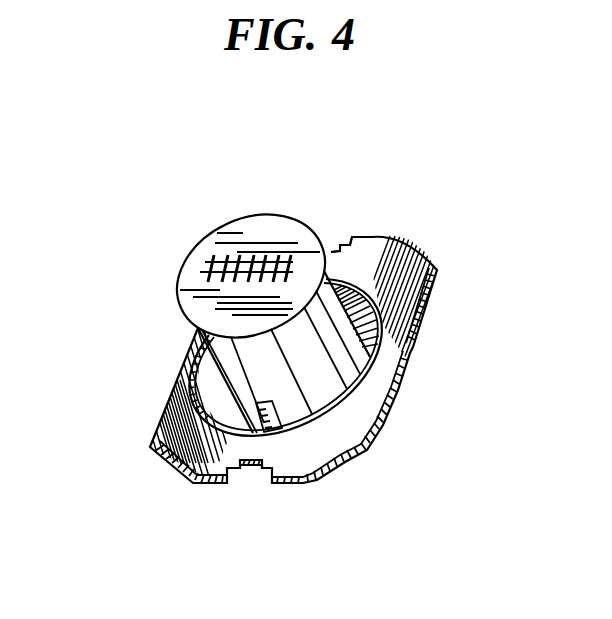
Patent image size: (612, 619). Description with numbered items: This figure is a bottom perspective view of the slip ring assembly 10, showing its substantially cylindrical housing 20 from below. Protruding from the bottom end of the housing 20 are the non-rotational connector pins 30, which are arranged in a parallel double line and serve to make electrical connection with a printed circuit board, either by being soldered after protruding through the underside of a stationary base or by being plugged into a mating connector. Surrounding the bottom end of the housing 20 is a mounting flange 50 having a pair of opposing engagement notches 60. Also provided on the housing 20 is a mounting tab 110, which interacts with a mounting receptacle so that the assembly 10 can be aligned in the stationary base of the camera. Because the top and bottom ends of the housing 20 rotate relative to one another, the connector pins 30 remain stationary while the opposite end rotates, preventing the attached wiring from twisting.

The slip ring assembly 10 is at (120, 402).
The housing 20 is at (180, 307).
The connector pins 30 is at (210, 258).
The mounting flange 50 is at (368, 463).
The engagement notches 60 is at (333, 250).
The mounting tab 110 is at (254, 440).